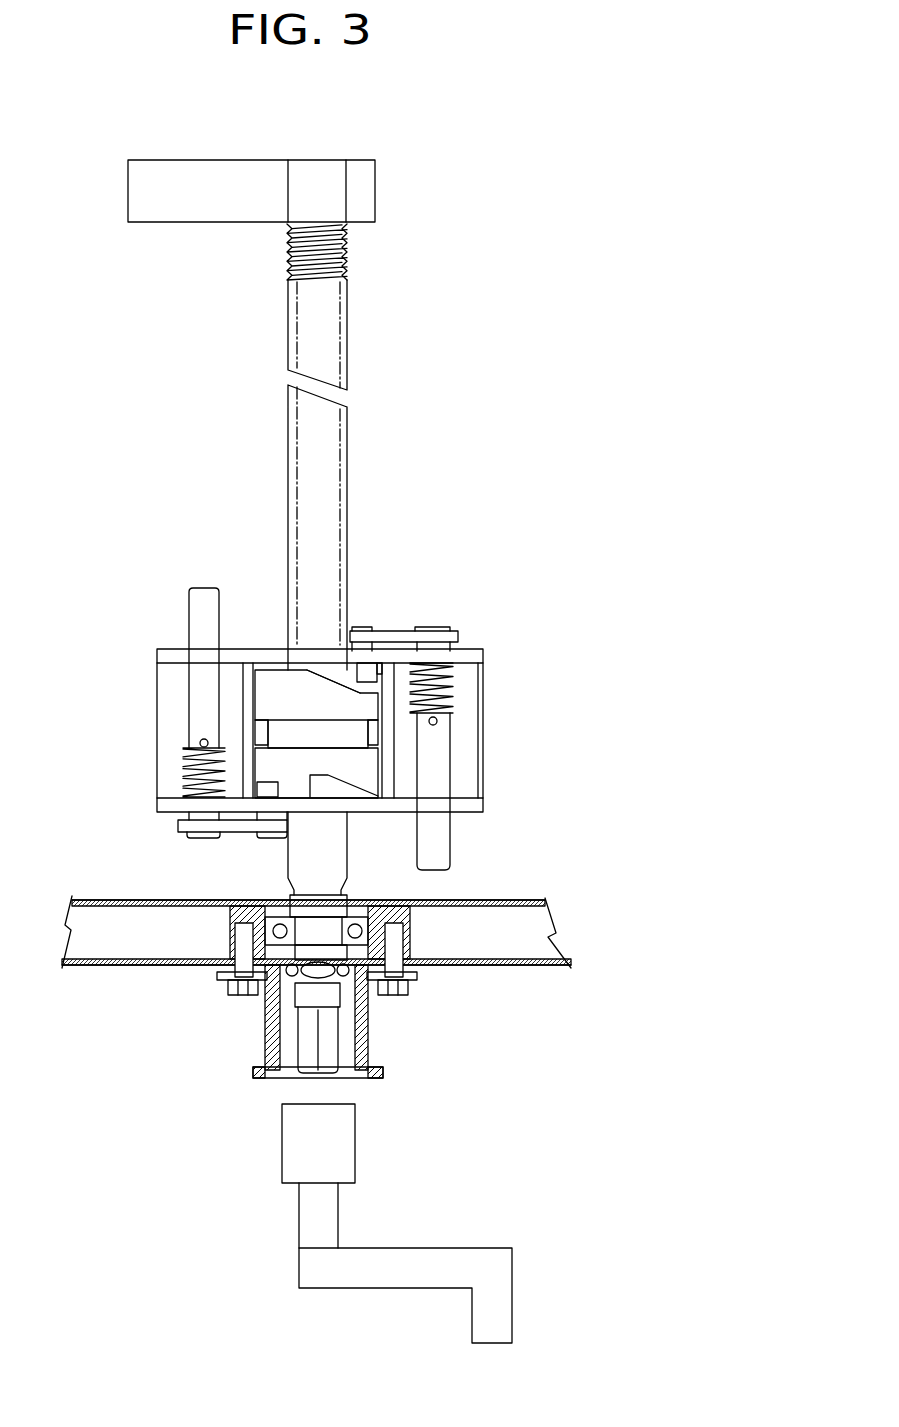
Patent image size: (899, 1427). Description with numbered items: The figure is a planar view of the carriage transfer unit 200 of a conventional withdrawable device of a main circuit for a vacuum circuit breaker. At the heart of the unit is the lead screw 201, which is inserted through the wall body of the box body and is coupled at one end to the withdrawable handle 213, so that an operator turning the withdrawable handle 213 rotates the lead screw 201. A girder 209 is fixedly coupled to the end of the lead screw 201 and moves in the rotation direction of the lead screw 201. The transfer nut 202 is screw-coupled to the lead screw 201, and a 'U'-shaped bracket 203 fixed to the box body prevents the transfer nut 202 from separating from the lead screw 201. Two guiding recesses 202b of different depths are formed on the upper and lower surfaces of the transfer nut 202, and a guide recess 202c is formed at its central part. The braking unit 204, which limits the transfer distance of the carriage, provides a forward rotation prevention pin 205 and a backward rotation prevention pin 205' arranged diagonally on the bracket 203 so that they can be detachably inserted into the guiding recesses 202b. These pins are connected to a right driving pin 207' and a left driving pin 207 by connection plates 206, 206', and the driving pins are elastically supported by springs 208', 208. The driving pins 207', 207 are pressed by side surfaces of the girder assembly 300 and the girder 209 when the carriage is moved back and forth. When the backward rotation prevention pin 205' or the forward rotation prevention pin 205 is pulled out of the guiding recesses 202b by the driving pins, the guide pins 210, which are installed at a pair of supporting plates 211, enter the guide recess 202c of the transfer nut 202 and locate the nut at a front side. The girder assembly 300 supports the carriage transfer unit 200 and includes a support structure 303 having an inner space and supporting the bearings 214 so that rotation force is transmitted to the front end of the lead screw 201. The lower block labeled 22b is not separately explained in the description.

The carriage transfer unit 200 is at (538, 502).
The girder 209 is at (203, 167).
The lead screw 201 is at (337, 455).
The bracket 203 is at (478, 657).
The left driving pin 207 is at (164, 713).
The spring 208 is at (150, 768).
The connection plate 206 is at (197, 841).
The supporting plate 211 is at (243, 679).
The transfer nut 202 is at (272, 683).
The guiding recess 202b is at (332, 677).
The guide recess 202c is at (281, 728).
The guide pin 210 is at (232, 729).
The lower block 22b is at (337, 788).
The forward rotation prevention pin 205 is at (249, 836).
The backward rotation prevention pin 205' is at (387, 619).
The braking unit 204 is at (418, 613).
The connection plate 206' is at (433, 610).
The spring 208' is at (486, 694).
The right driving pin 207' is at (490, 791).
The girder assembly 300 is at (538, 978).
The support structure 303 is at (490, 966).
The bearings 214 is at (380, 985).
The withdrawable handle 213 is at (300, 1222).